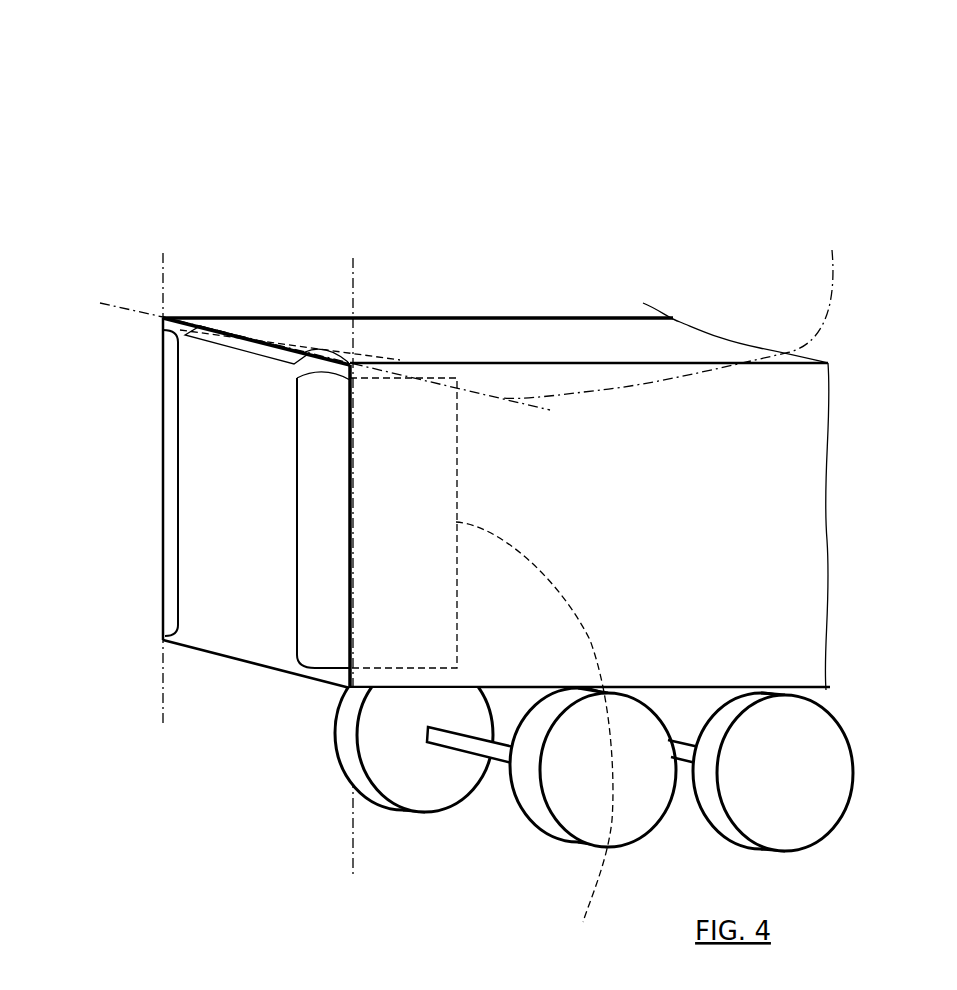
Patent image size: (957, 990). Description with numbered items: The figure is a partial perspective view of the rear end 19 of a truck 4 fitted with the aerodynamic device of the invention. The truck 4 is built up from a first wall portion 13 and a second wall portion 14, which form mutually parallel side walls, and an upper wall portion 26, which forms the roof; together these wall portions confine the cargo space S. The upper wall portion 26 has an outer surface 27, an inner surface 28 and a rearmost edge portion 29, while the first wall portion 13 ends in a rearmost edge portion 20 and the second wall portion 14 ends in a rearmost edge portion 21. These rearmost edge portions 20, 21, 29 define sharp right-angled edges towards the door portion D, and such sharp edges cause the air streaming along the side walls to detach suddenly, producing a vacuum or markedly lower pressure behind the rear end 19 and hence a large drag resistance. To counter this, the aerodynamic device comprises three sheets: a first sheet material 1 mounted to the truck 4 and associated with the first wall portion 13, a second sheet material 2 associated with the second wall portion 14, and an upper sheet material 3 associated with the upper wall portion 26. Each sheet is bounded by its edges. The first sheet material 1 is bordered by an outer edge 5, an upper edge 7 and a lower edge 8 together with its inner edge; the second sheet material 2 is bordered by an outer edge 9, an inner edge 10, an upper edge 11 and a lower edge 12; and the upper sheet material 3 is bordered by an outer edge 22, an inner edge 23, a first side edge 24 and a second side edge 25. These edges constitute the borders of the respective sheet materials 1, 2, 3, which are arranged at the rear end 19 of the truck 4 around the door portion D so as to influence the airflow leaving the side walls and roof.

The first sheet material 1 is at (168, 537).
The second sheet material 2 is at (294, 624).
The upper sheet material 3 is at (208, 326).
The truck 4 is at (541, 172).
The outer edge 5 is at (178, 398).
The upper edge 7 is at (160, 343).
The lower edge 8 is at (163, 628).
The outer edge 9 is at (317, 560).
The inner edge 10 is at (534, 738).
The upper edge 11 is at (457, 375).
The lower edge 12 is at (330, 668).
The first wall portion 13 is at (537, 318).
The second wall portion 14 is at (498, 610).
The rear end 19 is at (150, 447).
The rearmost edge portion 20 is at (162, 297).
The rearmost edge portion 21 is at (353, 297).
The outer edge 22 is at (257, 328).
The inner edge 23 is at (310, 332).
The first side edge 24 is at (243, 330).
The second side edge 25 is at (365, 352).
The upper wall portion 26 is at (553, 342).
The outer surface 27 is at (650, 333).
The inner surface 28 is at (333, 372).
The rearmost edge portion 29 is at (672, 306).